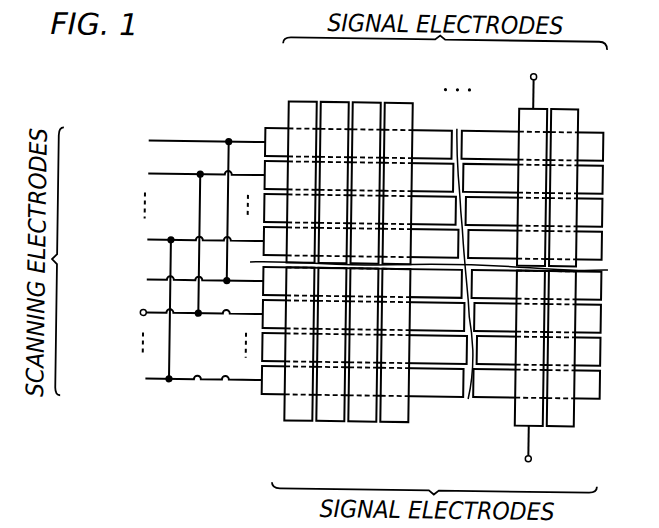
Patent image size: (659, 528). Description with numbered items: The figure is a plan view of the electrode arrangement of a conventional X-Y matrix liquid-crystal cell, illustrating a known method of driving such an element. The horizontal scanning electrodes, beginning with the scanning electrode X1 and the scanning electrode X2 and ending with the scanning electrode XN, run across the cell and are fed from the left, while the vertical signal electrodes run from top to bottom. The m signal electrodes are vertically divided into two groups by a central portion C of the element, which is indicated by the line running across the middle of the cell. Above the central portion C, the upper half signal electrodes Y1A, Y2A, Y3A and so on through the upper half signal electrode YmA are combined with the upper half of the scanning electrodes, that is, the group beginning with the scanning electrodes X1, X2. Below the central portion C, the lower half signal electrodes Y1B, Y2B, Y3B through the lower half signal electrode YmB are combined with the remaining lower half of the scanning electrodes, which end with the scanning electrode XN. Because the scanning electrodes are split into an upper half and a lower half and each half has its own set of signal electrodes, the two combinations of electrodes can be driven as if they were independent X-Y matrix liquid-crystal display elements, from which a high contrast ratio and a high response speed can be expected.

The scanning electrode X1 is at (360, 206).
The scanning electrode X2 is at (360, 239).
The scanning electrode XN is at (353, 381).
The upper half signal electrode Y1A is at (300, 103).
The upper half signal electrode Y2A is at (332, 103).
The upper half signal electrode Y3A is at (364, 103).
The upper half signal electrode YmA is at (562, 107).
The lower half signal electrode Y1B is at (300, 422).
The lower half signal electrode Y2B is at (332, 422).
The lower half signal electrode Y3B is at (364, 422).
The lower half signal electrode YmB is at (562, 424).
The central portion C is at (431, 267).